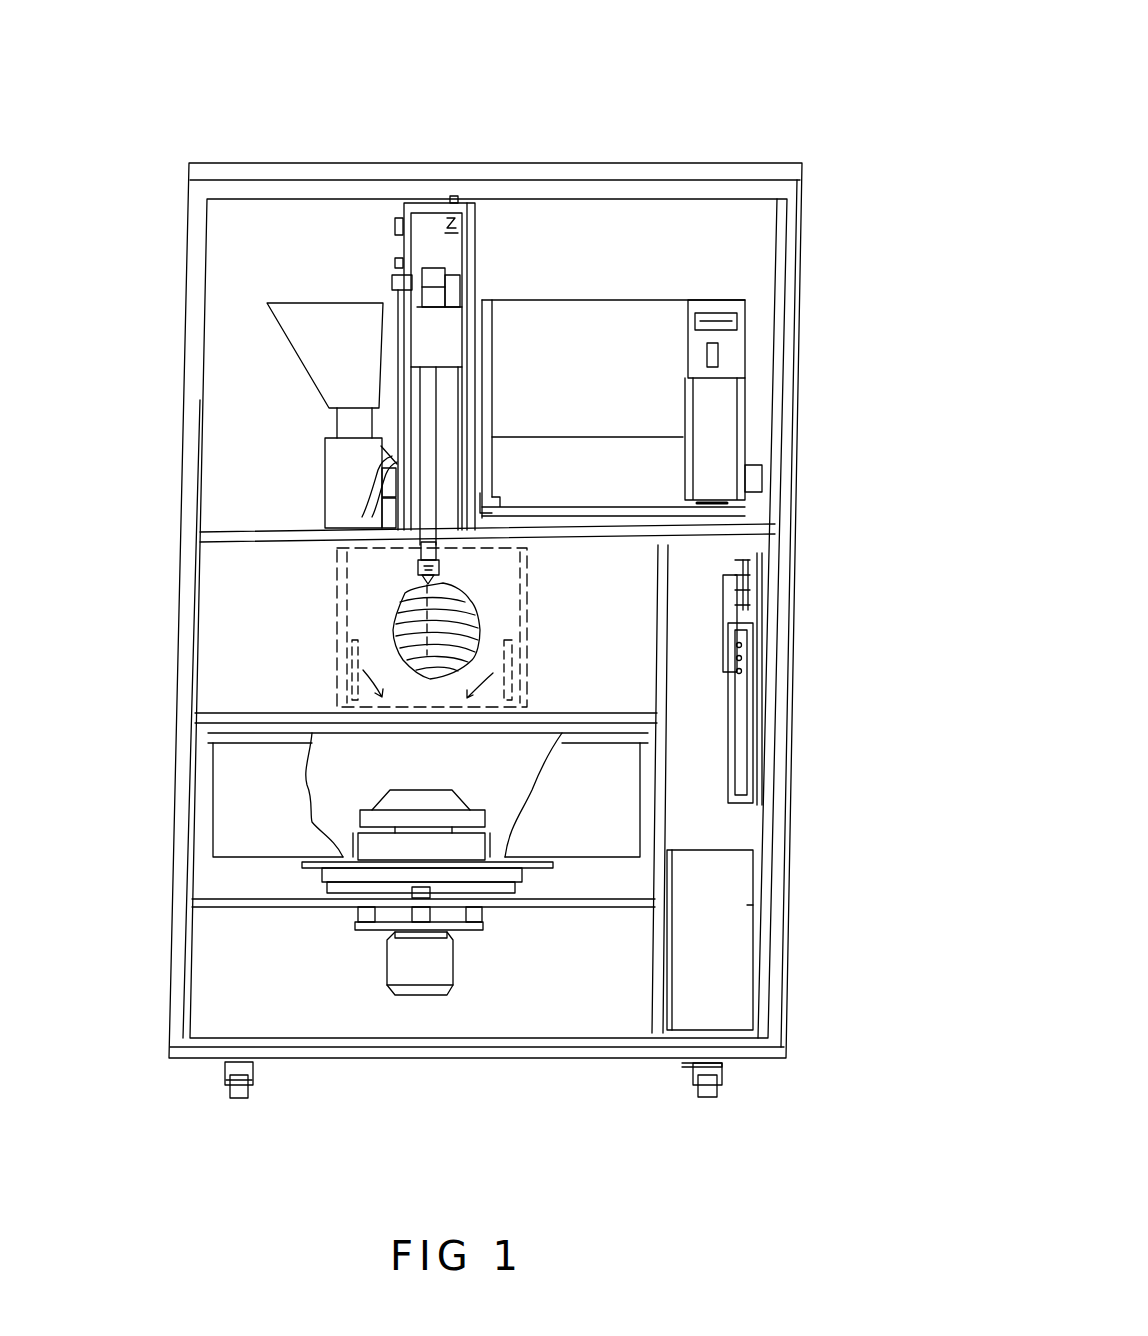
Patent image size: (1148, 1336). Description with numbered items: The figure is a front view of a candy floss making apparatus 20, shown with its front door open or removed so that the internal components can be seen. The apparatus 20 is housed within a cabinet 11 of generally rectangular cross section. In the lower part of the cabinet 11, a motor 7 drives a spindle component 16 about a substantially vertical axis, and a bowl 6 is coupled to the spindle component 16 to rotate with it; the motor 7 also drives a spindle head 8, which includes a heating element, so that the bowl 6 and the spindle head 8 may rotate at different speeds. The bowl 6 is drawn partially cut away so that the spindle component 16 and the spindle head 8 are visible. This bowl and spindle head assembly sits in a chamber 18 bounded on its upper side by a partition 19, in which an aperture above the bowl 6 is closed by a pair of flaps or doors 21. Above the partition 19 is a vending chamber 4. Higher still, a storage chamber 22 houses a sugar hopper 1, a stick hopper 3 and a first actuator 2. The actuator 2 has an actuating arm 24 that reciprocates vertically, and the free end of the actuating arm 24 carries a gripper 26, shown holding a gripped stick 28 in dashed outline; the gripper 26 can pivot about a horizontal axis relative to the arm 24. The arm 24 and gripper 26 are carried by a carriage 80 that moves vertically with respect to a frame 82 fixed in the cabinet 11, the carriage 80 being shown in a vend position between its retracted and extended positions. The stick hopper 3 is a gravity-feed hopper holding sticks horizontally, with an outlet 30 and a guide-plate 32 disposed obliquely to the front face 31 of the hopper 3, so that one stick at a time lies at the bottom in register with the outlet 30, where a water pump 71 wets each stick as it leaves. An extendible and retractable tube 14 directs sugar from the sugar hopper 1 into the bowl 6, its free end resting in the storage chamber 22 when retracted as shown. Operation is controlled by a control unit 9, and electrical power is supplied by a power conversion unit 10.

The apparatus 20 is at (770, 108).
The storage chamber 22 is at (260, 246).
The sugar hopper 1 is at (318, 352).
The extendible and retractable tube 14 is at (363, 493).
The water pump 71 is at (377, 517).
The frame 82 is at (470, 238).
The carriage 80 is at (427, 245).
The actuating arm 24 is at (437, 400).
The first actuator 2 is at (438, 343).
The stick hopper 3 is at (665, 415).
The front face 31 is at (662, 333).
The guide-plate 32 is at (660, 483).
The outlet 30 is at (492, 500).
The vending chamber 4 is at (505, 595).
The gripper 26 is at (417, 572).
The gripped stick 28 is at (430, 615).
The flaps or doors 21 is at (340, 658).
The control unit 9 is at (747, 690).
The partition 19 is at (228, 715).
The bowl 6 is at (232, 818).
The spindle head 8 is at (407, 817).
The spindle component 16 is at (387, 850).
The chamber 18 is at (615, 882).
The motor 7 is at (432, 972).
The power conversion unit 10 is at (725, 945).
The cabinet 11 is at (623, 1052).